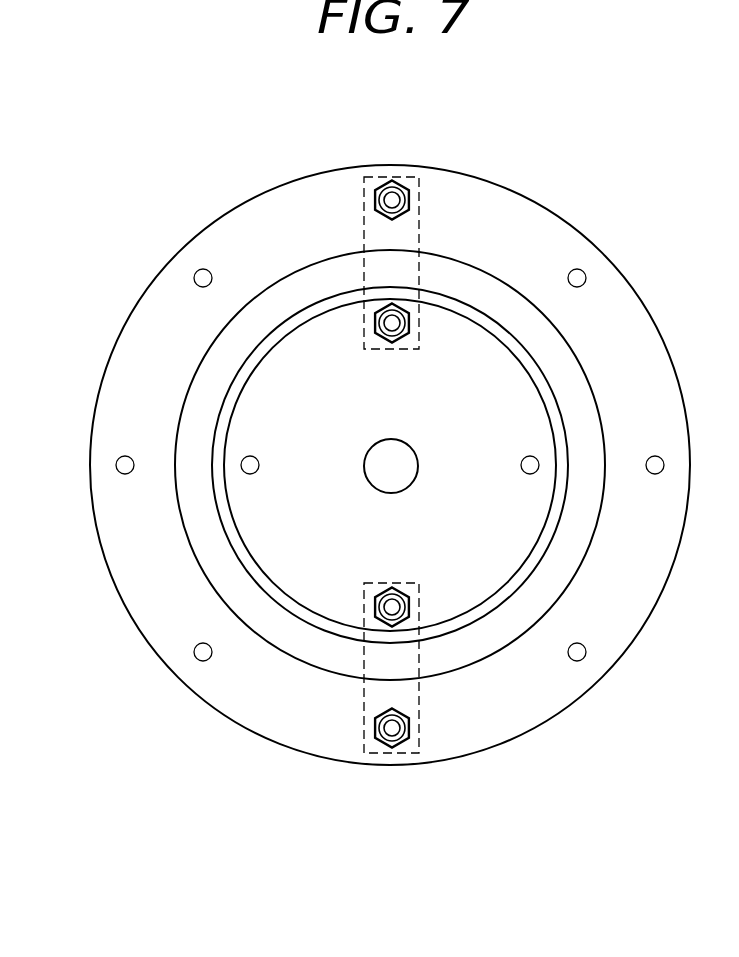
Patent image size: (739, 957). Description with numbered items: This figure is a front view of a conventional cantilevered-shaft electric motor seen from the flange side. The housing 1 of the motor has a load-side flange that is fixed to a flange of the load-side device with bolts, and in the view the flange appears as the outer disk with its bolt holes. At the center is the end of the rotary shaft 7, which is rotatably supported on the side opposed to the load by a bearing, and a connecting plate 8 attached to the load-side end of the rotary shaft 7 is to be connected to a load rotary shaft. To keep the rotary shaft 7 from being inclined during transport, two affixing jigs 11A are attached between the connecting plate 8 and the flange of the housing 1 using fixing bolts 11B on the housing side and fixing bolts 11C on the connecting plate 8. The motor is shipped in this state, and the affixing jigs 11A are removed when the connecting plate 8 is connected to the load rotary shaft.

The housing 1 is at (275, 232).
The connecting plate 8 is at (280, 400).
The rotary shaft 7 is at (383, 475).
The affixing jig 11A is at (410, 228).
The fixing bolt 11B is at (394, 186).
The fixing bolt 11C is at (392, 323).